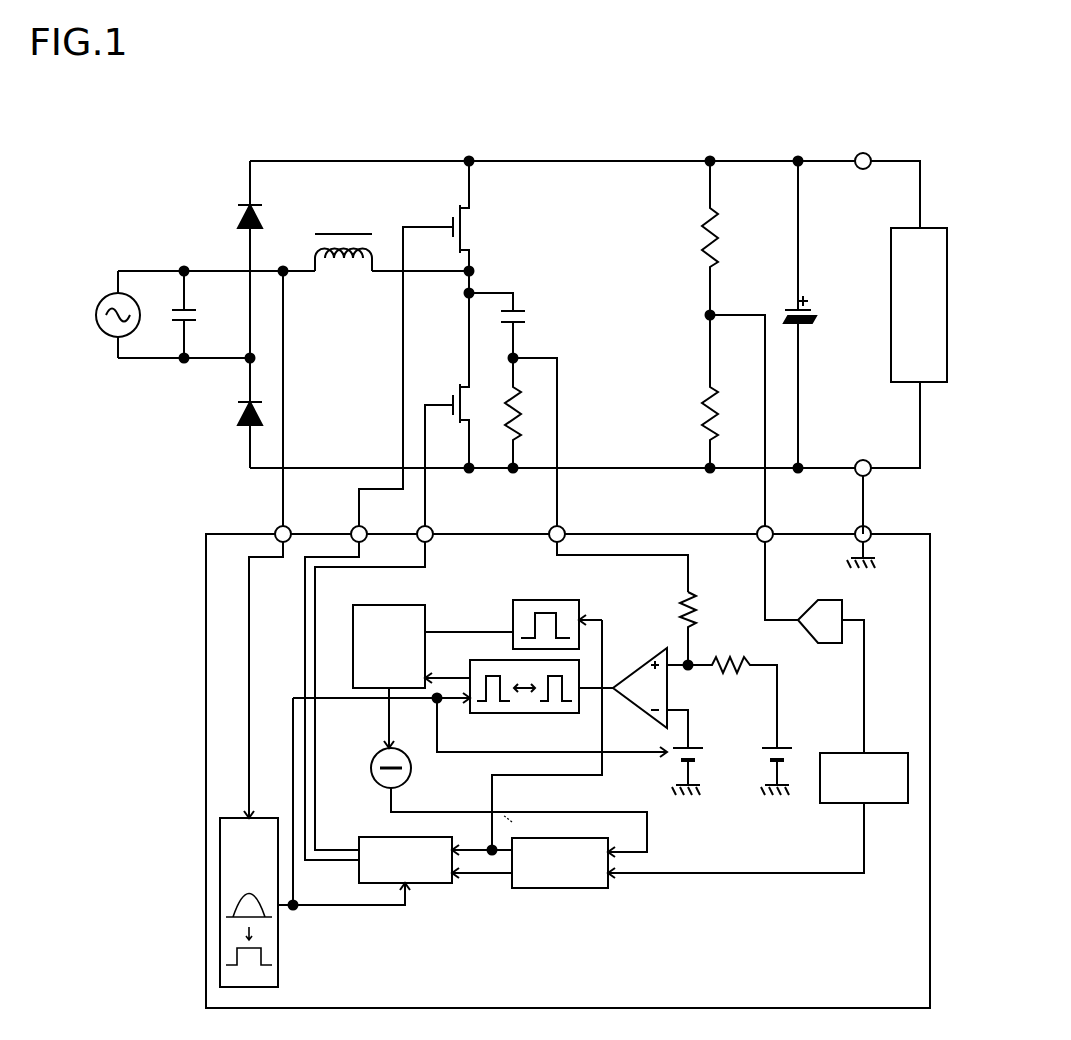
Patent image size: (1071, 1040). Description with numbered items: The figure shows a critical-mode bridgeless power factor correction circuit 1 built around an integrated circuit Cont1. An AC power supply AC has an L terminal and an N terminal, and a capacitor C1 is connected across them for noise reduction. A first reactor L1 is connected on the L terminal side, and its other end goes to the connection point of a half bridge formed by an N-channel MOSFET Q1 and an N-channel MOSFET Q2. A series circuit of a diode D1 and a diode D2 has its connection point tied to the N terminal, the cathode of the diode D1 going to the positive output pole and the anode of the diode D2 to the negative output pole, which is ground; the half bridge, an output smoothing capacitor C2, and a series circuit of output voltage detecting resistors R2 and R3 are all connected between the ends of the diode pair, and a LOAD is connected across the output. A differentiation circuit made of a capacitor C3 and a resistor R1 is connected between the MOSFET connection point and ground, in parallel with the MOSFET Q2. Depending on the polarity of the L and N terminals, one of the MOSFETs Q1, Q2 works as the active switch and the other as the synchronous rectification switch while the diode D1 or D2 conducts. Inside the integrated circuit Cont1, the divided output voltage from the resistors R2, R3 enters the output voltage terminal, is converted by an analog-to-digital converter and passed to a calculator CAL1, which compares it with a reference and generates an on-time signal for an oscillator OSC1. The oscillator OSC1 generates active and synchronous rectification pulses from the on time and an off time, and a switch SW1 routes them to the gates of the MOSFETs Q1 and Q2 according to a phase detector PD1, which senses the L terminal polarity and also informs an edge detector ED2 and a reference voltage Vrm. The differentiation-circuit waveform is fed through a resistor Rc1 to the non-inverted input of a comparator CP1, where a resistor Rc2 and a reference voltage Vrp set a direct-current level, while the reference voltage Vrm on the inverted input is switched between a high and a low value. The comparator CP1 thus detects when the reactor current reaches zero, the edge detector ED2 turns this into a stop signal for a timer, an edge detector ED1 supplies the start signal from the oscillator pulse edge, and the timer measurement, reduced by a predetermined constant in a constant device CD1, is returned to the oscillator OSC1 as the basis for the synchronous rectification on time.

The bridgeless power factor correction circuit 1 is at (550, 133).
The integrated circuit Cont1 is at (206, 604).
The AC power supply AC is at (105, 314).
The capacitor C1 is at (194, 314).
The diode D1 is at (238, 216).
The diode D2 is at (238, 413).
The first reactor L1 is at (338, 242).
The N-channel MOSFET Q1 is at (429, 347).
The N-channel MOSFET Q2 is at (459, 402).
The capacitor C3 is at (513, 413).
The resistor R1 is at (524, 413).
The output voltage detecting resistor R2 is at (733, 347).
The output voltage detecting resistor R3 is at (720, 391).
The output smoothing capacitor C2 is at (804, 314).
The load LOAD is at (919, 305).
The resistor Rc1 is at (701, 631).
The resistor Rc2 is at (732, 692).
The comparator CP1 is at (633, 691).
The reference voltage Vrm is at (698, 762).
The reference voltage Vrp is at (785, 762).
The edge detector ED1 is at (511, 611).
The edge detector ED2 is at (520, 713).
The constant device CD1 is at (376, 781).
The phase detector PD1 is at (315, 902).
The switch SW1 is at (435, 860).
The oscillator OSC1 is at (560, 863).
The calculator CAL1 is at (758, 815).